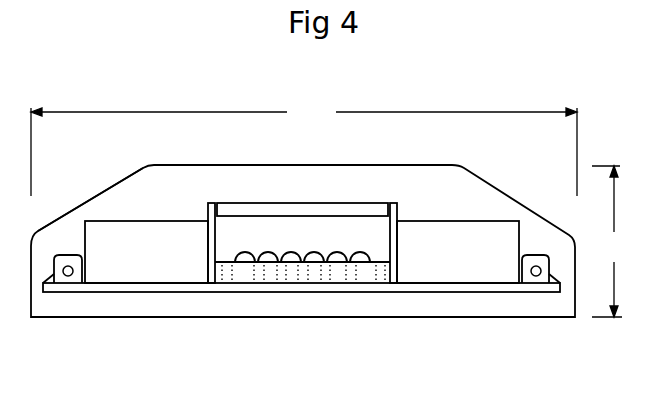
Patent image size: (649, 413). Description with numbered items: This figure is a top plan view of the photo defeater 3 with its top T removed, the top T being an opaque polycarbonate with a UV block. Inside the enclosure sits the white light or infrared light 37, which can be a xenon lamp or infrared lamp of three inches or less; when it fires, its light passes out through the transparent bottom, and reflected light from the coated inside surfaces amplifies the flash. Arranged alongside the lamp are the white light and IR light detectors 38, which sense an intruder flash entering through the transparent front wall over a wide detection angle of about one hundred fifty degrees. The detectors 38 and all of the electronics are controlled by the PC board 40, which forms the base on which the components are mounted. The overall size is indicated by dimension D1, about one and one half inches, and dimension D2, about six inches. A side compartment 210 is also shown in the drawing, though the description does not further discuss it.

The photo defeater 3 is at (173, 82).
The top T is at (102, 190).
The white light or infrared light 37 is at (360, 210).
The white light and IR light detectors 38 is at (260, 262).
The PC board 40 is at (465, 292).
The side compartment 210 is at (458, 252).
The dimension D1 is at (609, 241).
The dimension D2 is at (304, 151).